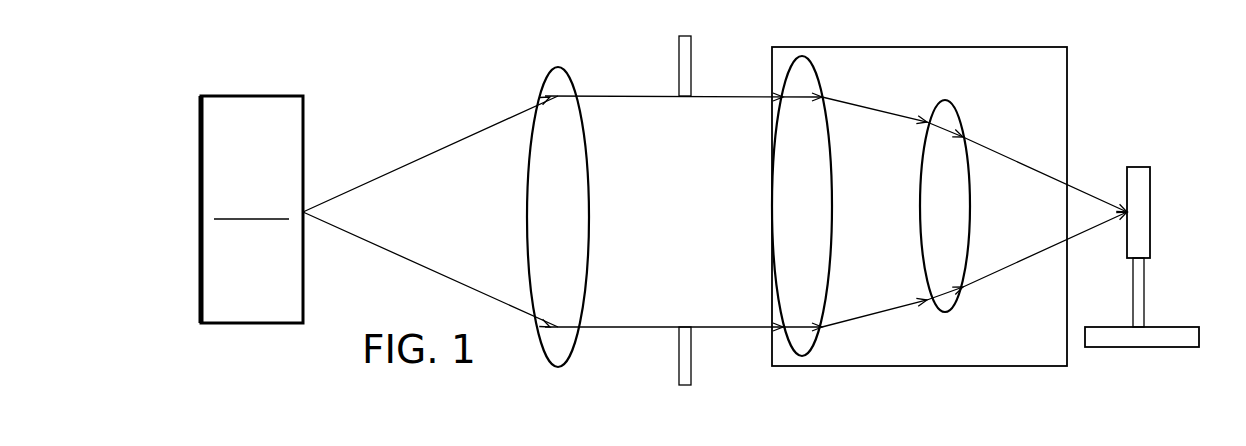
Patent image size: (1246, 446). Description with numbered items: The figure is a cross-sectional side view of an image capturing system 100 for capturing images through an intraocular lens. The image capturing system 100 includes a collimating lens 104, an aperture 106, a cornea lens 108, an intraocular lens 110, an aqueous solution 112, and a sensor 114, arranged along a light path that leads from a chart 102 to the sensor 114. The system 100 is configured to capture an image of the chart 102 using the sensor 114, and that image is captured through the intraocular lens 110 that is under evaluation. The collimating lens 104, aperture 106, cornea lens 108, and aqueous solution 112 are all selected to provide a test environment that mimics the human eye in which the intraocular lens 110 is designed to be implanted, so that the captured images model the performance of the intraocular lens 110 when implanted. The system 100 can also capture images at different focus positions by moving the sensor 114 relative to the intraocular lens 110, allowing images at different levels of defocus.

The image capturing system 100 is at (768, 382).
The chart 102 is at (305, 113).
The collimating lens 104 is at (588, 143).
The aperture 106 is at (680, 55).
The cornea lens 108 is at (771, 215).
The intraocular lens 110 is at (920, 190).
The aqueous solution 112 is at (953, 367).
The sensor 114 is at (1165, 347).